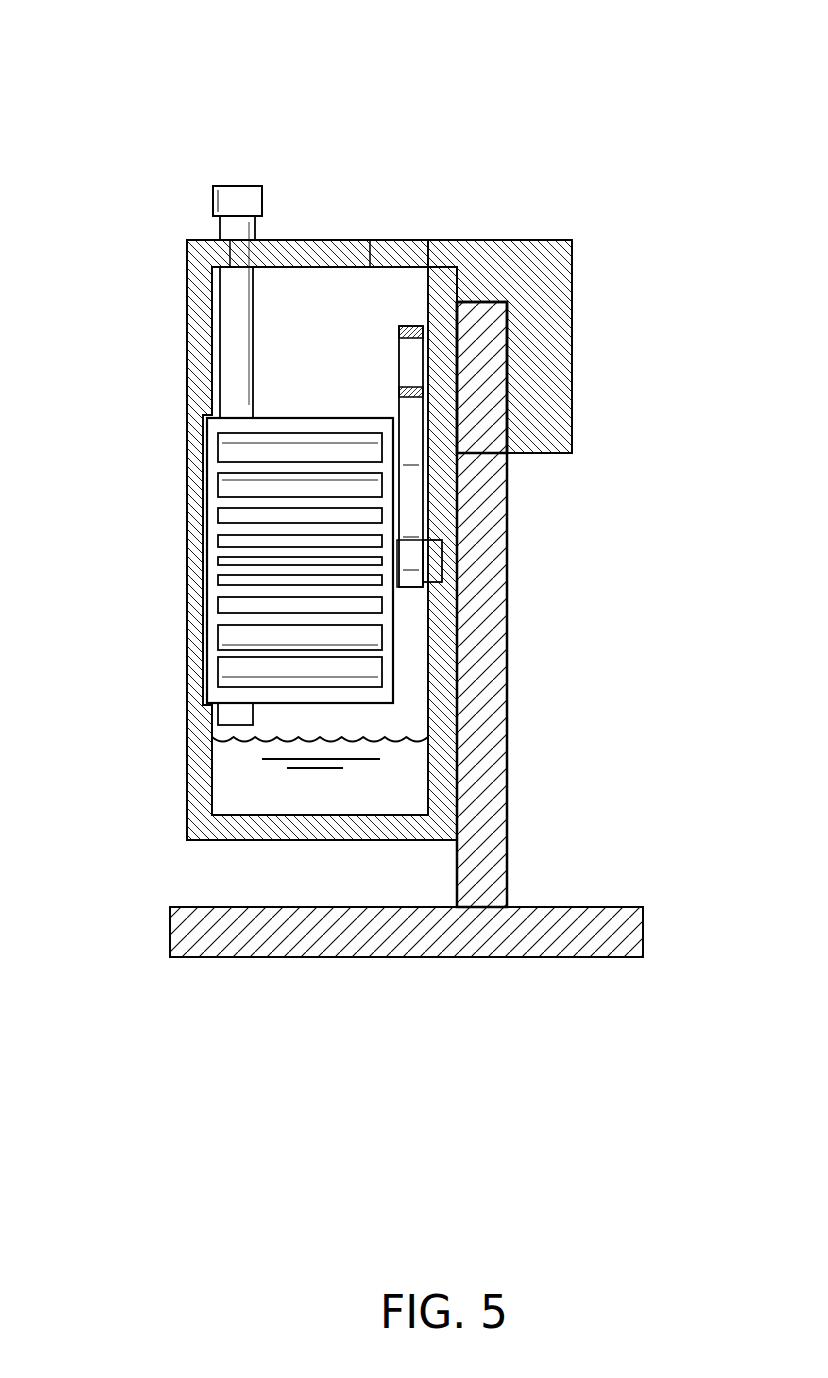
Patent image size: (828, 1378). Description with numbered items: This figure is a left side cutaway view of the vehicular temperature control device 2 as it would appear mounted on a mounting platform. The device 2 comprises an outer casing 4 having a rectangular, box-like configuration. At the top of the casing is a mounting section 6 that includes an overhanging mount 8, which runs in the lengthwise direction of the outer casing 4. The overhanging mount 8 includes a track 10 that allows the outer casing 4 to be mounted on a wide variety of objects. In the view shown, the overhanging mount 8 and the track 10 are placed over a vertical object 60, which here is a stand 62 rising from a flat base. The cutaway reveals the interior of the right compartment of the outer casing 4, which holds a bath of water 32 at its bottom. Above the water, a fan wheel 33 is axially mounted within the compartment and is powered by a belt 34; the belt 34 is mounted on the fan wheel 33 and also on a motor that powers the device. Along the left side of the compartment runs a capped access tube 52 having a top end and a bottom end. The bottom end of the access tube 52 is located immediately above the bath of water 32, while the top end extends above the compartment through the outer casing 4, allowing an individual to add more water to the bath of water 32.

The vehicular temperature control device 2 is at (328, 148).
The outer casing 4 is at (397, 240).
The mounting section 6 is at (569, 232).
The overhanging mount 8 is at (538, 278).
The track 10 is at (511, 333).
The bath of water 32 is at (223, 765).
The fan wheel 33 is at (227, 512).
The belt 34 is at (410, 513).
The access tube 52 is at (227, 363).
The vertical object 60 is at (485, 823).
The stand 62 is at (480, 868).